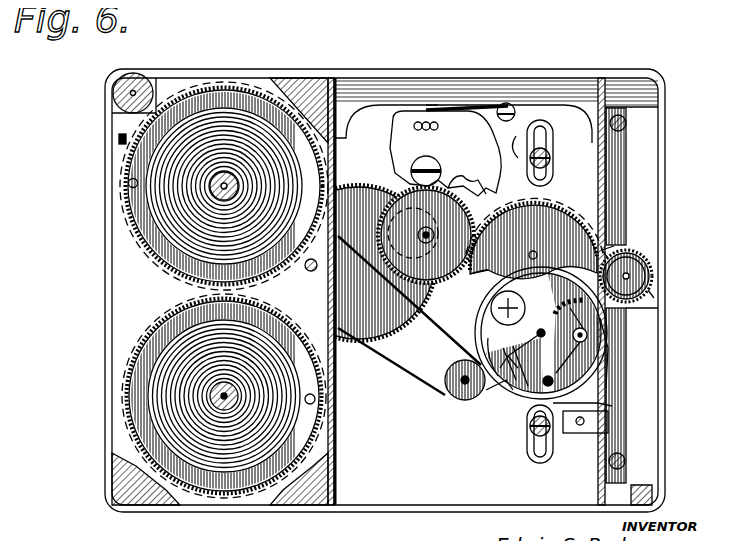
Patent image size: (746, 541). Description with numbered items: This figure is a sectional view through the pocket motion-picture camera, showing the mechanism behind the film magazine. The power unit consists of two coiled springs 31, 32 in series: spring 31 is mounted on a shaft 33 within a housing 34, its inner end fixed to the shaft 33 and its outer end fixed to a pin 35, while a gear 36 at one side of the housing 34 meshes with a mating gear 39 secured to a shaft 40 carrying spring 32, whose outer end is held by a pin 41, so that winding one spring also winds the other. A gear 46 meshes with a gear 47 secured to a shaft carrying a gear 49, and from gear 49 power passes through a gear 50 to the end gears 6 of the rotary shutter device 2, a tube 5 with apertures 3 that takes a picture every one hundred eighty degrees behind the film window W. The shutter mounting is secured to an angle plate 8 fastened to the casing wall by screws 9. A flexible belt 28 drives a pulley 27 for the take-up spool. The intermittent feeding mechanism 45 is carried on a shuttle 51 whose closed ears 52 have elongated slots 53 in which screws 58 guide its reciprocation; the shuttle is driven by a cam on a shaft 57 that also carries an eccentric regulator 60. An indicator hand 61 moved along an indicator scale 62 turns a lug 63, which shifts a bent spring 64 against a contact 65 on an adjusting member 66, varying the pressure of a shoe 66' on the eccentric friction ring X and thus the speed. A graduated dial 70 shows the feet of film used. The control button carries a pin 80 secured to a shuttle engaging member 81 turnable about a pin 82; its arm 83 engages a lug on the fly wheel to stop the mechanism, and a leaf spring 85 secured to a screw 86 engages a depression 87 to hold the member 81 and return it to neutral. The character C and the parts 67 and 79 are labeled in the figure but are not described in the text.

The casing C is at (97, 304).
The shutter device 2 is at (646, 282).
The apertures 3 is at (644, 266).
The tube 5 is at (612, 242).
The end gears 6 is at (632, 256).
The angle plate 8 is at (612, 158).
The screws 9 is at (616, 114).
The driving pulley 27 is at (436, 384).
The flexible cord or belt 28 is at (420, 318).
The coiled spring 31 is at (140, 360).
The coiled spring 32 is at (331, 129).
The shaft 33 is at (220, 392).
The housing 34 is at (118, 390).
The pin 35 is at (328, 396).
The gear 36 is at (150, 294).
The mating gear 39 is at (148, 258).
The shaft 40 is at (128, 202).
The pin 41 is at (120, 173).
The intermittent feeding mechanism 45 is at (610, 376).
The gear 46 is at (358, 251).
The gear 47 is at (372, 202).
The gear 49 is at (438, 276).
The gear 50 is at (533, 241).
The shuttle 51 is at (572, 425).
The extending ears 52 is at (519, 138).
The elongated slots 53 is at (550, 126).
The shaft 57 is at (507, 308).
The screws 58 is at (542, 156).
The regulator 60 is at (541, 332).
The indicator hand 61 is at (570, 301).
The indicator scale 62 is at (558, 299).
The lug 63 is at (571, 350).
The bent spring 64 is at (522, 348).
The contact 65 is at (555, 380).
The adjusting member 66 is at (458, 391).
The shoe 66' is at (492, 399).
The spring 67 is at (610, 340).
The graduated dial 70 is at (104, 76).
The stop 79 is at (109, 131).
The pin 80 is at (410, 112).
The shuttle engaging member 81 is at (445, 153).
The pin 82 is at (416, 165).
The arm 83 is at (467, 175).
The leaf spring 85 is at (474, 98).
The screw 86 is at (506, 99).
The depression 87 is at (436, 123).
The window W is at (565, 198).
The eccentric friction ring X is at (464, 310).